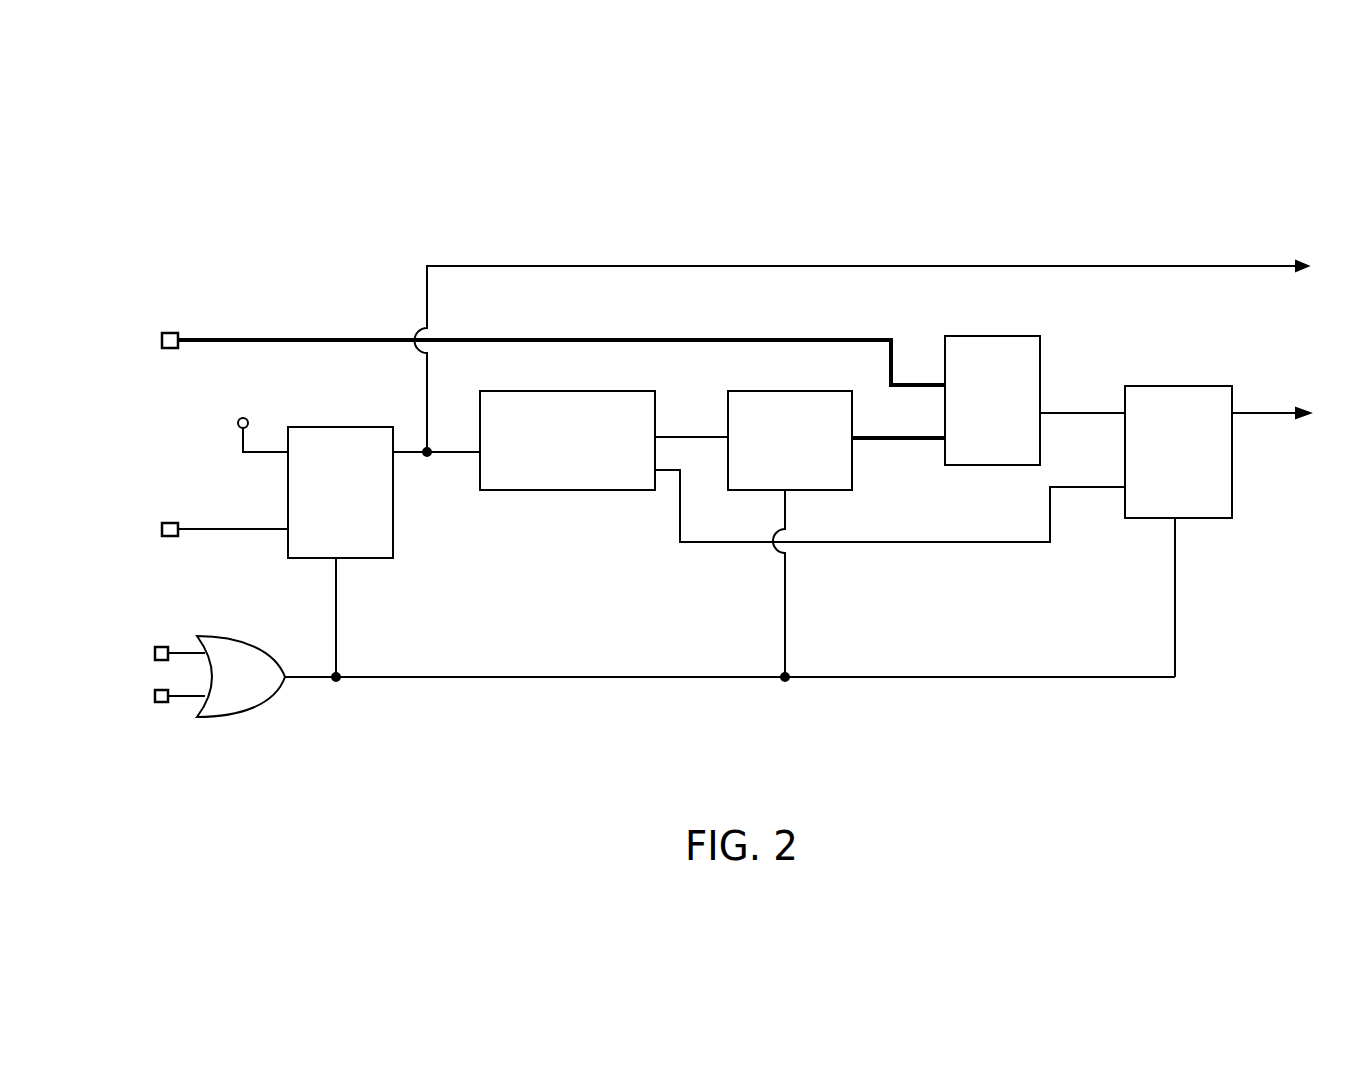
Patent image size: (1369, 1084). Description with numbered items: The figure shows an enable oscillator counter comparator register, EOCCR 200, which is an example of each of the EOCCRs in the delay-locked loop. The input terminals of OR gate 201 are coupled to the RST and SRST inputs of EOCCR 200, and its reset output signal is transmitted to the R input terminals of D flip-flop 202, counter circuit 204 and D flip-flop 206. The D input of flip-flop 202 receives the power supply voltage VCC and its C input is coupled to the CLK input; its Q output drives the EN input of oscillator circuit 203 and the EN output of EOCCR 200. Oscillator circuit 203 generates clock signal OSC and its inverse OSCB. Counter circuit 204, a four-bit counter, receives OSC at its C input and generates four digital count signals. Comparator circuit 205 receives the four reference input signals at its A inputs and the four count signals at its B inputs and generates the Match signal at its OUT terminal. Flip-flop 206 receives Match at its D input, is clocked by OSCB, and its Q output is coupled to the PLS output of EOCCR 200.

The enable oscillator counter comparator register (EOCCR) 200 is at (748, 177).
The OR gate 201 is at (220, 633).
The D flip-flop 202 is at (393, 545).
The oscillator circuit 203 is at (553, 391).
The counter circuit 204 is at (770, 391).
The comparator circuit 205 is at (980, 336).
The D flip-flop 206 is at (1168, 386).